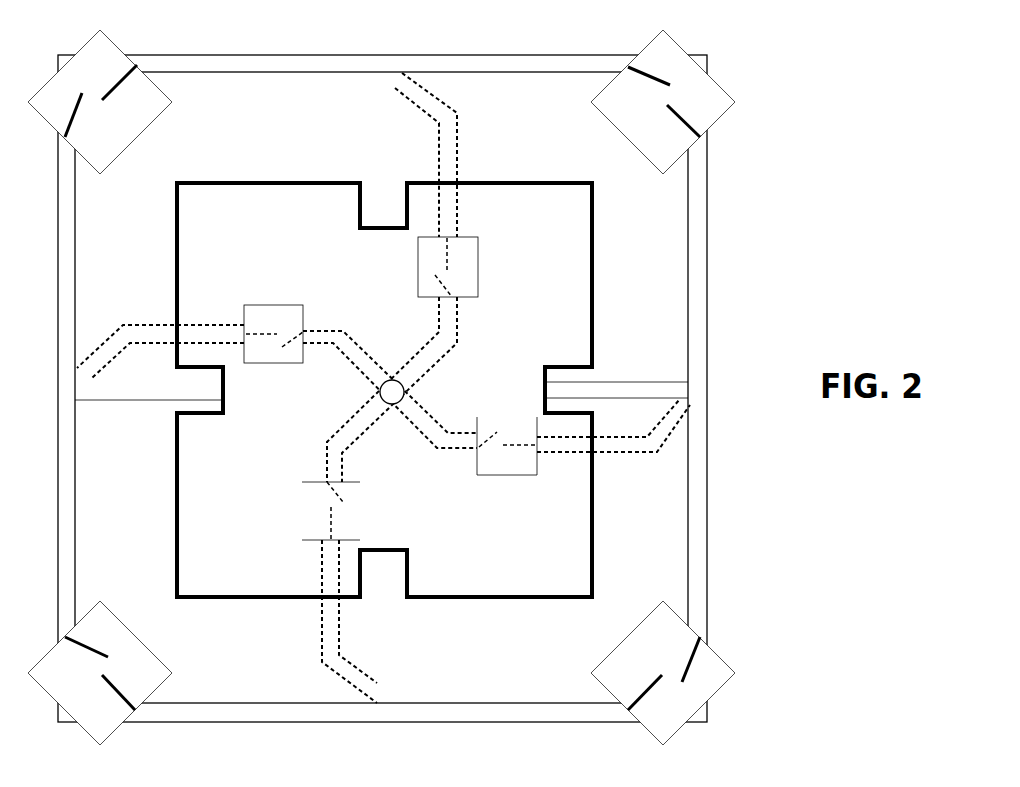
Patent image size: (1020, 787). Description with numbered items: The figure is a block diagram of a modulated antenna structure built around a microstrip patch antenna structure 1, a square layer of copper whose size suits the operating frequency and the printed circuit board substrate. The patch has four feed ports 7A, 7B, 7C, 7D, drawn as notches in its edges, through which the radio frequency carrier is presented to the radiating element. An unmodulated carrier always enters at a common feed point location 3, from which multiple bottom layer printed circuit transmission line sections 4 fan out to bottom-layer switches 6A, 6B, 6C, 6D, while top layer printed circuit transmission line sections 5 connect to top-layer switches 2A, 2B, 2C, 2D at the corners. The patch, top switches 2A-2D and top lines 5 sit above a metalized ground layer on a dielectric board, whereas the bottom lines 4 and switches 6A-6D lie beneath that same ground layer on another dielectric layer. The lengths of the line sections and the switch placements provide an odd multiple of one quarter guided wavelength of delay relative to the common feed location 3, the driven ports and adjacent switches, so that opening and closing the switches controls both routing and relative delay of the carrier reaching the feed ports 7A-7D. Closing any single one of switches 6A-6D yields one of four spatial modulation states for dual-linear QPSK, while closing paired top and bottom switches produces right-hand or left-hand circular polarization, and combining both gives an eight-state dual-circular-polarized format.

The microstrip patch antenna structure 1 is at (594, 229).
The top-layer switch 2A is at (731, 659).
The top-layer switch 2B is at (153, 650).
The top-layer switch 2C is at (143, 133).
The top-layer switch 2D is at (724, 88).
The common feed point location 3 is at (404, 386).
The bottom layer printed circuit transmission line sections 4 is at (461, 322).
The top layer printed circuit transmission line sections 5 is at (708, 307).
The bottom-layer switch 6A is at (479, 264).
The bottom-layer switch 6B is at (519, 473).
The bottom-layer switch 6C is at (363, 529).
The bottom-layer switch 6D is at (258, 302).
The feed port 7A is at (410, 569).
The feed port 7B is at (226, 400).
The feed port 7C is at (358, 205).
The feed port 7D is at (576, 364).